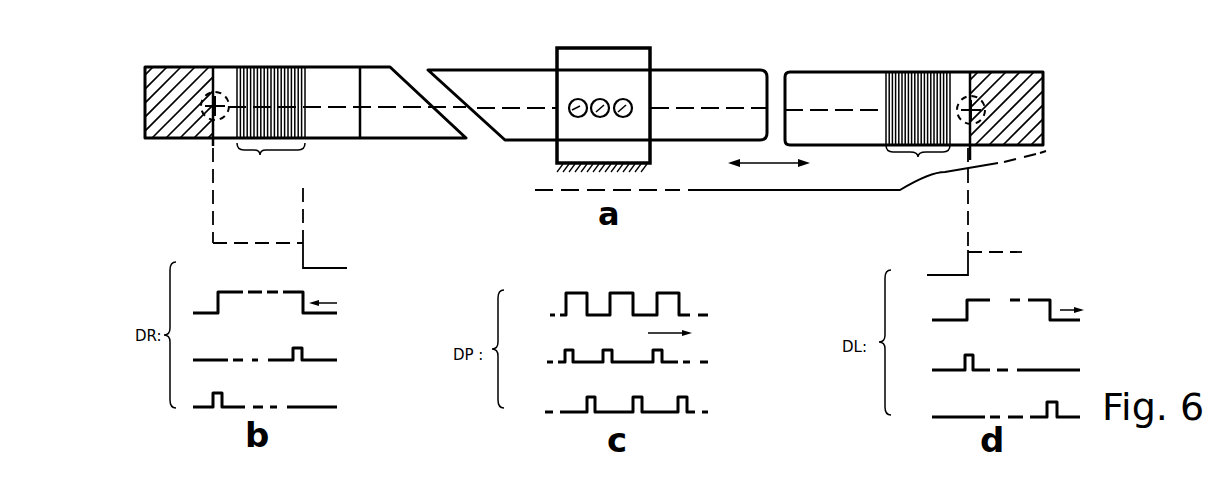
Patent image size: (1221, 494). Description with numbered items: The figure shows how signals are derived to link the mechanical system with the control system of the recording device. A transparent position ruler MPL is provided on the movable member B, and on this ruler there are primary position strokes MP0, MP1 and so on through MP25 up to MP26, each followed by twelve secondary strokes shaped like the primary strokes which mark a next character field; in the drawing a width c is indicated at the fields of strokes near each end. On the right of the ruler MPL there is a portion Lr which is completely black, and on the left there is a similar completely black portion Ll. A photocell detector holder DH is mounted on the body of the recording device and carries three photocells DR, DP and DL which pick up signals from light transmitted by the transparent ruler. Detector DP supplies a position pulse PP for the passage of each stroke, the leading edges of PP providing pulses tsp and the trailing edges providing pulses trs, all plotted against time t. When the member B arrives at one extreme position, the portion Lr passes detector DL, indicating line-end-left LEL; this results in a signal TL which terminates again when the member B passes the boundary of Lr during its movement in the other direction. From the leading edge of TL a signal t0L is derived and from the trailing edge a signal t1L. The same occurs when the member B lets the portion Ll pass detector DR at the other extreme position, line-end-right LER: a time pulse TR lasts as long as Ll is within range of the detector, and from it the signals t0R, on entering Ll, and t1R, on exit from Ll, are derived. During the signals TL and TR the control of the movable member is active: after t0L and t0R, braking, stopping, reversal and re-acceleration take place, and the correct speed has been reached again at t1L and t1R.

The left black portion Ll is at (170, 130).
The right black portion Lr is at (1043, 128).
The primary position stroke MP26 is at (290, 64).
The primary position stroke MP25 is at (364, 65).
The position ruler MPL is at (714, 88).
The primary position stroke MP1 is at (898, 67).
The primary position stroke MP0 is at (955, 70).
The graduation field width c is at (593, 158).
The photocell detector holder DH is at (620, 110).
The photocell DR is at (574, 103).
The photocell DP is at (606, 97).
The photocell DL is at (637, 97).
The movable member B is at (843, 171).
The line-end-right LER is at (280, 208).
The line-end-left LEL is at (974, 211).
The time pulse TR is at (232, 308).
The signal t0R is at (280, 358).
The signal t1R is at (280, 404).
The time axis t is at (701, 327).
The position pulse PP is at (668, 308).
The pulse tsp is at (605, 360).
The pulse trs is at (605, 408).
The signal TL is at (991, 314).
The signal t0L is at (986, 366).
The signal t1L is at (986, 413).